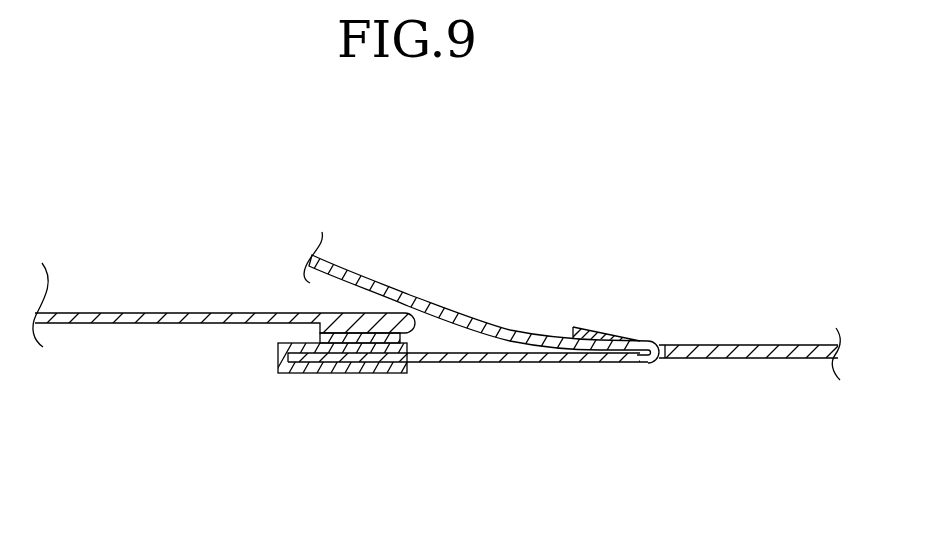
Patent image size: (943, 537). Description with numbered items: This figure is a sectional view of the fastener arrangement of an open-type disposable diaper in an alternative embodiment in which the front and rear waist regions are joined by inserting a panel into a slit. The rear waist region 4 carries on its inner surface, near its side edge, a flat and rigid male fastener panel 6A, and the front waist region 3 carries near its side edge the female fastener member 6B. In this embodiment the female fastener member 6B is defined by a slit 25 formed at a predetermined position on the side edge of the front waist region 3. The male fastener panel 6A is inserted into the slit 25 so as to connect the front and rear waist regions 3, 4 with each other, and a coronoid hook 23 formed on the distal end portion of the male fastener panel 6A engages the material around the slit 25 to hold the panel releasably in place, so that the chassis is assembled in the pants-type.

The front waist region 3 is at (753, 358).
The rear waist region 4 is at (162, 325).
The male fastener panel 6A is at (462, 367).
The female fastener member 6B is at (685, 338).
The coronoid hook 23 is at (608, 328).
The slit 25 is at (658, 359).